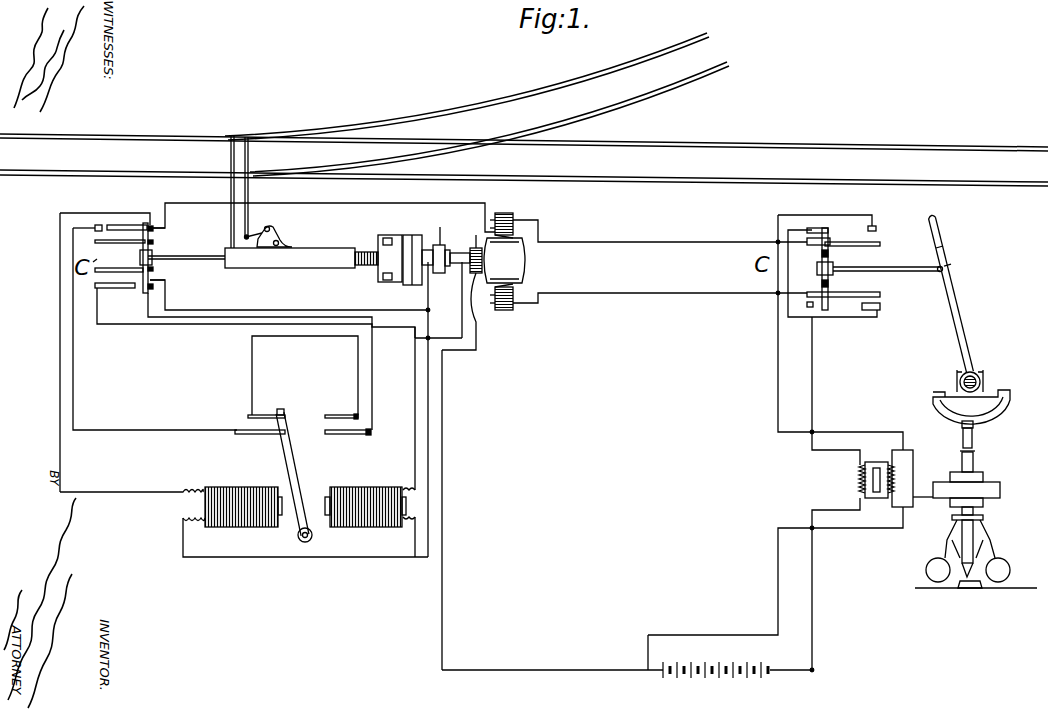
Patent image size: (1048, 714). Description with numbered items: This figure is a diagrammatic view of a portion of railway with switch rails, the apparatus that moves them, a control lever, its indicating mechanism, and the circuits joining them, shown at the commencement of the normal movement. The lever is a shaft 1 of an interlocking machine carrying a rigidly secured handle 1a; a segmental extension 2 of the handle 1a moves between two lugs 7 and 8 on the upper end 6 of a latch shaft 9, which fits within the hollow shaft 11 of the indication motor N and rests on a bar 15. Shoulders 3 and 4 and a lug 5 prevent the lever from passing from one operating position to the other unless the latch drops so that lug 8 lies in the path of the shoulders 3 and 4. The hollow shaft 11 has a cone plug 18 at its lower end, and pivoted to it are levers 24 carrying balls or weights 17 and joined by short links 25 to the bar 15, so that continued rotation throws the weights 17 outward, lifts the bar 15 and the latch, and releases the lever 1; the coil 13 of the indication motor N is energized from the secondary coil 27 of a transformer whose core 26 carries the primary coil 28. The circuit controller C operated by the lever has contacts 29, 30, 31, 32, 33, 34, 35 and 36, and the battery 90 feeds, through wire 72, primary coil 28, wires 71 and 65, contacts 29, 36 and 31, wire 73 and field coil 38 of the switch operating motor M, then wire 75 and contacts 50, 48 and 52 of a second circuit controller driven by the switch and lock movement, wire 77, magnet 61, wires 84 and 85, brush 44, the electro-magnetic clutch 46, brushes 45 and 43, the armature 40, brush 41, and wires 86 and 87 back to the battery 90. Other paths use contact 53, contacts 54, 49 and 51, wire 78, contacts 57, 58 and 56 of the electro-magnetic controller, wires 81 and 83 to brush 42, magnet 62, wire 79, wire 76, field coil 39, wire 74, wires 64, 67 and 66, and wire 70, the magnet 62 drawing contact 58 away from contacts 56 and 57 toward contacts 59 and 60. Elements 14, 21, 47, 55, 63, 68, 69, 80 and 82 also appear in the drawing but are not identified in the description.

The handle 1a is at (966, 332).
The shaft 1 is at (959, 382).
The segmental extension 2 is at (1005, 405).
The shoulder 3 is at (961, 409).
The shoulder 4 is at (990, 425).
The lug 5 is at (992, 428).
The latch upper end 6 is at (963, 448).
The lug 7 is at (972, 438).
The lug 8 is at (962, 428).
The latch shaft 9 is at (973, 453).
The hollow shaft 11 is at (975, 511).
The indication motor coil 13 is at (966, 468).
The collar 14 is at (985, 518).
The bar 15 is at (971, 566).
The balls or weights 17 is at (927, 574).
The cone plug 18 is at (964, 578).
The magnet N 21 is at (1000, 491).
The levers 24 is at (991, 536).
The short links 25 is at (950, 540).
The transformer core 26 is at (875, 498).
The secondary coil 27 is at (899, 479).
The primary coil 28 is at (852, 479).
The contact 29 is at (815, 227).
The contact 30 is at (876, 226).
The contact 31 is at (880, 244).
The contact 32 is at (880, 295).
The contact 33 is at (880, 307).
The contact 34 is at (810, 308).
The contact 35 is at (829, 298).
The contact 36 is at (831, 240).
The field coil 38 is at (512, 218).
The field coil 39 is at (512, 309).
The armature 40 is at (528, 262).
The brush 41 is at (478, 312).
The brush 42 is at (461, 283).
The brush 43 is at (476, 237).
The brush 44 is at (427, 285).
The brush 45 is at (438, 240).
The electro-magnetic clutch 46 is at (410, 236).
The cylinder 47 is at (251, 258).
The contact 48 is at (156, 230).
The contact 49 is at (156, 281).
The contact 50 is at (100, 243).
The contact 51 is at (123, 261).
The contact 52 is at (130, 224).
The contact 53 is at (98, 224).
The contact 54 is at (105, 289).
The contact arm 55 is at (145, 294).
The contact 56 is at (280, 413).
The contact 57 is at (252, 435).
The contact 58 is at (294, 448).
The contact 59 is at (340, 415).
The contact 60 is at (345, 435).
The magnet 61 is at (171, 498).
The magnet 62 is at (365, 498).
The wire 63 is at (825, 212).
The wire 64 is at (808, 301).
The wire 65 is at (789, 247).
The wire 66 is at (838, 318).
The wire 67 is at (778, 382).
The wire 68 is at (913, 478).
The wire 69 is at (905, 508).
The wire 70 is at (843, 529).
The wire 71 is at (812, 382).
The wire 72 is at (828, 603).
The wire 73 is at (660, 232).
The wire 74 is at (660, 290).
The wire 75 is at (320, 203).
The wire 76 is at (334, 310).
The wire 77 is at (60, 292).
The wire 78 is at (73, 340).
The wire 79 is at (180, 325).
The wire 80 is at (214, 317).
The wire 81 is at (252, 368).
The wire 82 is at (358, 357).
The wire 83 is at (403, 340).
The wire 84 is at (318, 557).
The wire 85 is at (429, 458).
The wire 86 is at (443, 392).
The wire 87 is at (672, 589).
The battery 90 is at (715, 680).